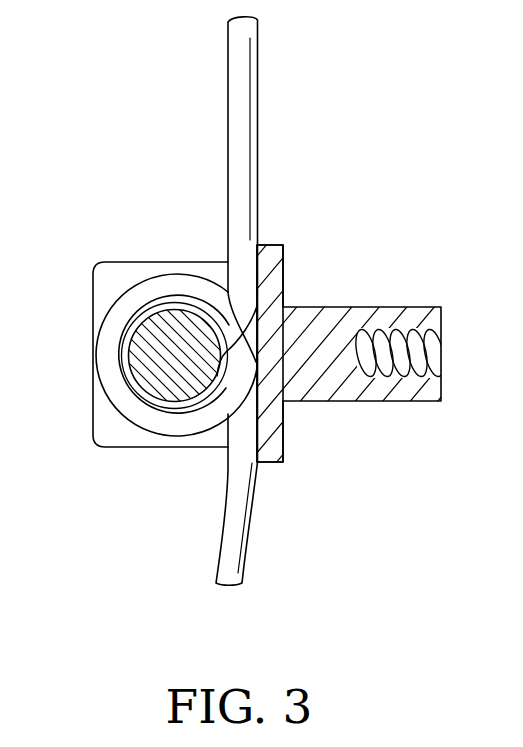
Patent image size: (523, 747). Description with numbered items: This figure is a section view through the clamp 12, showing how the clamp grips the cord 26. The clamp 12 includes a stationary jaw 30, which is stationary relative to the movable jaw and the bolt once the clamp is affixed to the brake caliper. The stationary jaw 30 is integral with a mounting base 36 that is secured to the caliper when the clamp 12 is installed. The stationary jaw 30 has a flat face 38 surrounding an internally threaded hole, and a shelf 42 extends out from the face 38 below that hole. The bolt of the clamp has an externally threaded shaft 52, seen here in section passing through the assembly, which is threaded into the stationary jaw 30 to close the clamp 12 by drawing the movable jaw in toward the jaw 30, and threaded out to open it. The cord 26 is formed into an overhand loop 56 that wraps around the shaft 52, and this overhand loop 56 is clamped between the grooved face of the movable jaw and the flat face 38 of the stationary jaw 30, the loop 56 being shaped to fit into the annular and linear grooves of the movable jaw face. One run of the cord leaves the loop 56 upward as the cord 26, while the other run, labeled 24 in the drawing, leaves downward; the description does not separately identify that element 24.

The clamp 12 is at (86, 208).
The wire lower portion 24 is at (230, 546).
The cord 26 is at (238, 145).
The stationary jaw 30 is at (92, 408).
The mounting base 36 is at (345, 392).
The flat face 38 is at (113, 430).
The shelf 42 is at (266, 250).
The externally threaded shaft 52 is at (143, 353).
The overhand loop 56 is at (108, 328).